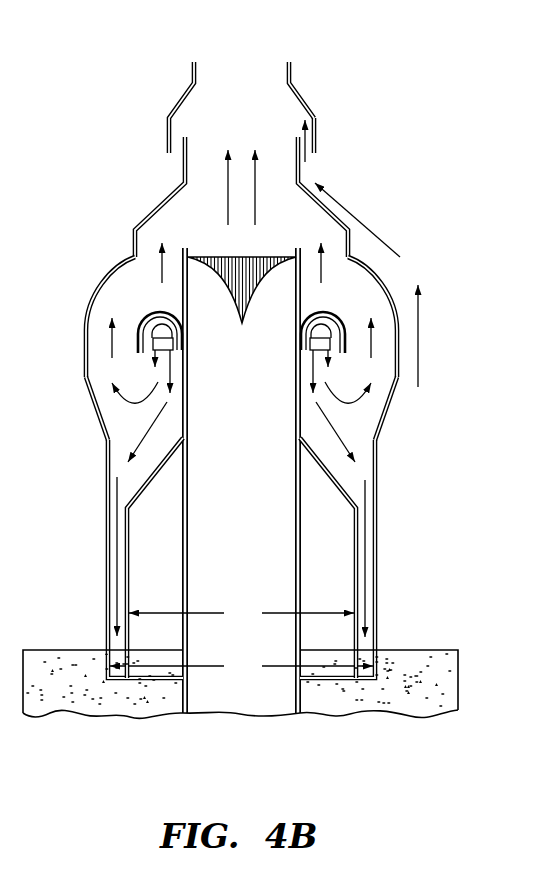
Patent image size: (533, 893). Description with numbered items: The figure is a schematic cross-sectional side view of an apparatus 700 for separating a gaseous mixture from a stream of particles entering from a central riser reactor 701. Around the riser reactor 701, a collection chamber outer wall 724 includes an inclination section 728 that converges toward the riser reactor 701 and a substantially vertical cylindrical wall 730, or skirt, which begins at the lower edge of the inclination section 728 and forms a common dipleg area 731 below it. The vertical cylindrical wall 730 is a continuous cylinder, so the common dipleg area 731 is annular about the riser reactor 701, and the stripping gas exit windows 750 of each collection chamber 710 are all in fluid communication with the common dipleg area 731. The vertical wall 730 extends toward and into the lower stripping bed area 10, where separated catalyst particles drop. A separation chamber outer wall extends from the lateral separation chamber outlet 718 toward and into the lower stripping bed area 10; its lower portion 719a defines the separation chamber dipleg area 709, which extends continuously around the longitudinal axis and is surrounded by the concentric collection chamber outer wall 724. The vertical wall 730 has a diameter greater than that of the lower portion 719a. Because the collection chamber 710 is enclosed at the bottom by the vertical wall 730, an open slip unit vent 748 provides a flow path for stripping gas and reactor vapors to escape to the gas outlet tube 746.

The lower stripping bed area 10 is at (460, 673).
The apparatus 700 is at (427, 140).
The riser reactor 701 is at (301, 300).
The separation chamber dipleg area 709 is at (155, 642).
The collection chamber 710 is at (128, 423).
The lateral separation chamber outlet 718 is at (150, 318).
The lower portion of separation chamber outer wall 719a is at (357, 525).
The collection chamber outer wall 724 is at (387, 417).
The inclination section 728 is at (398, 384).
The substantially vertical cylindrical wall 730 is at (377, 503).
The common dipleg area 731 is at (112, 553).
The gas outlet tube 746 is at (308, 96).
The open slip unit vent 748 is at (317, 153).
The stripping gas exit window 750 is at (122, 468).